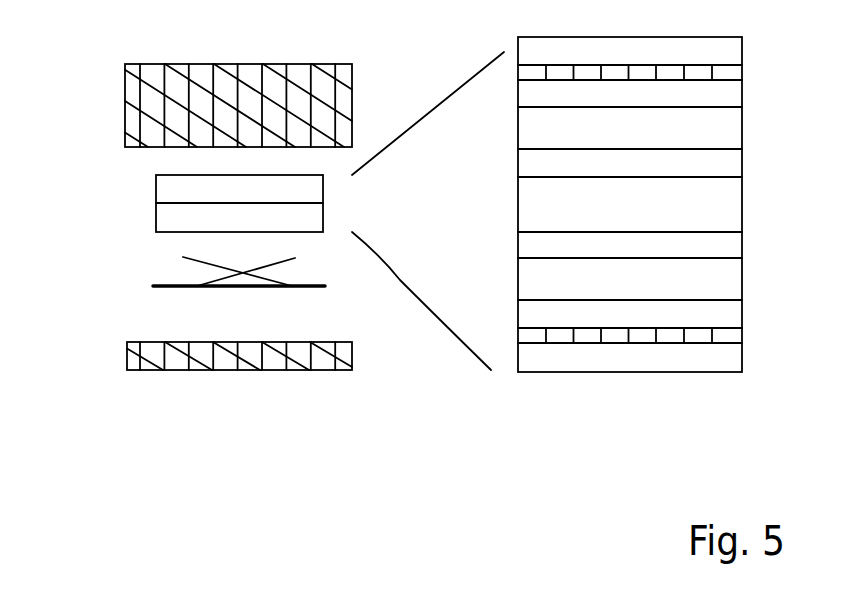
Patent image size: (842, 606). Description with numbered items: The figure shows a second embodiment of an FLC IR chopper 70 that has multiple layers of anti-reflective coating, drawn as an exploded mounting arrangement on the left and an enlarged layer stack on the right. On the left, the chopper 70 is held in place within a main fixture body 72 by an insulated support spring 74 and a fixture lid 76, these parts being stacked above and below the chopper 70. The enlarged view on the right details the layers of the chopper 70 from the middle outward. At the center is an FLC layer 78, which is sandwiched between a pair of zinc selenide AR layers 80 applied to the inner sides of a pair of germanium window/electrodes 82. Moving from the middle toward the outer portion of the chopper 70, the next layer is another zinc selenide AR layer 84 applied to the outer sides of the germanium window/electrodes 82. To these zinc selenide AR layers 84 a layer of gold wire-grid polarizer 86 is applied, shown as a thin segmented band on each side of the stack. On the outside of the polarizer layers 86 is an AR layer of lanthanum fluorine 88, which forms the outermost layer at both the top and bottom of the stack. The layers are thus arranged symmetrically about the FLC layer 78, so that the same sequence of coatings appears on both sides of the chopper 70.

The FLC IR chopper 70 is at (442, 247).
The main fixture body 72 is at (131, 56).
The insulated support spring 74 is at (138, 297).
The fixture lid 76 is at (150, 381).
The FLC layer 78 is at (722, 207).
The zinc selenide AR layers 80 is at (718, 165).
The germanium window/electrodes 82 is at (720, 135).
The zinc selenide AR layer 84 is at (723, 100).
The gold wire-grid polarizer 86 is at (725, 78).
The lanthanum fluorine AR layer 88 is at (723, 57).